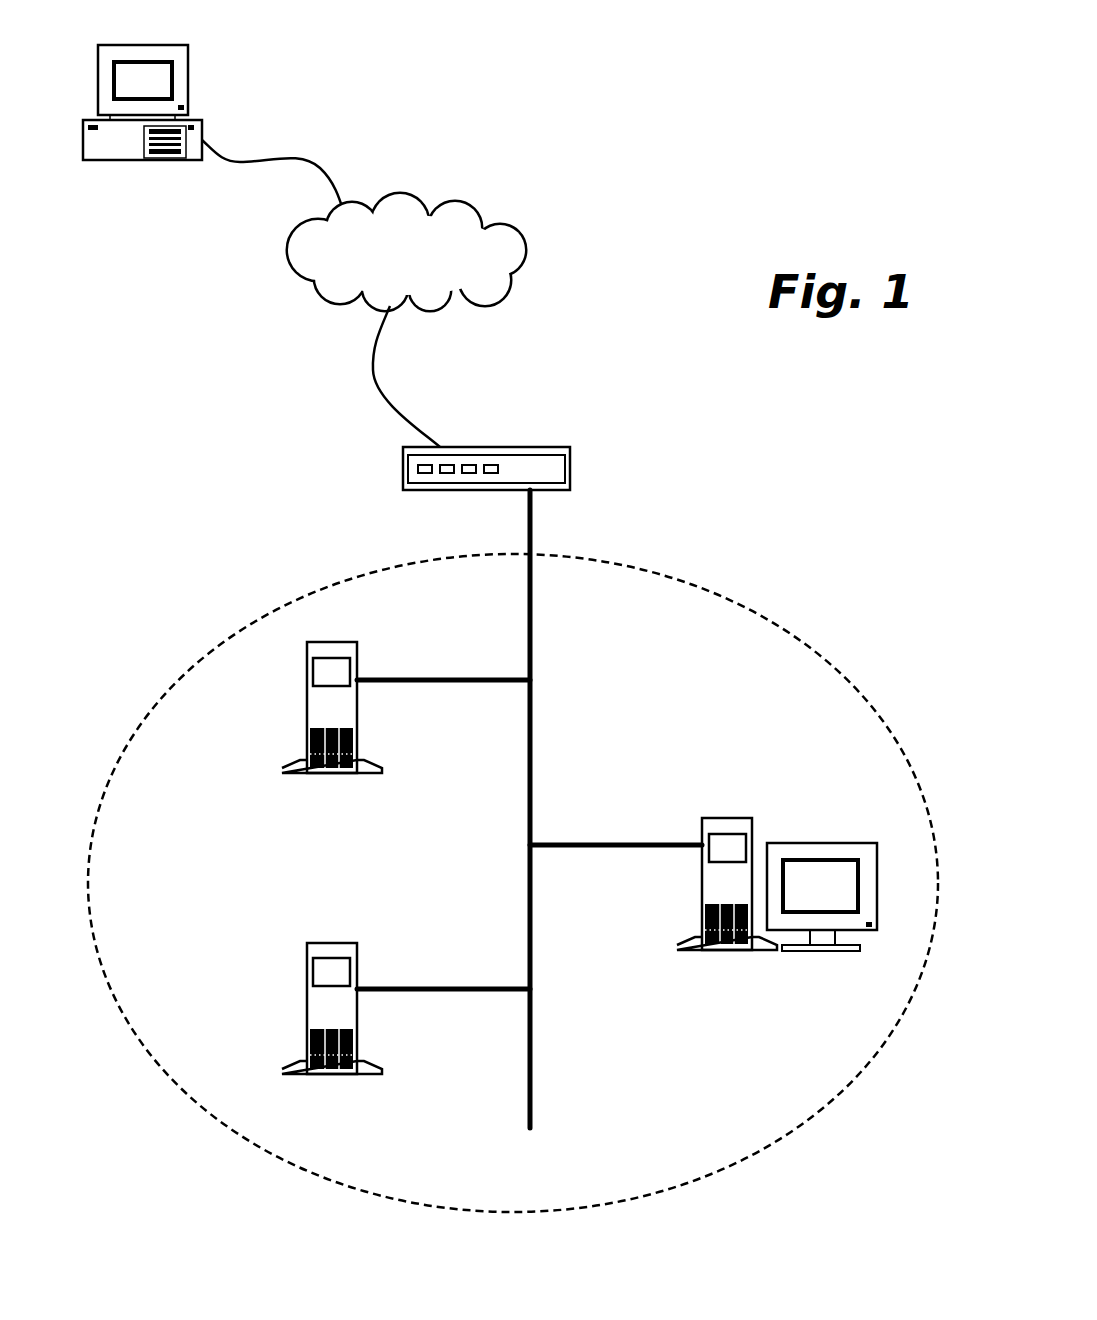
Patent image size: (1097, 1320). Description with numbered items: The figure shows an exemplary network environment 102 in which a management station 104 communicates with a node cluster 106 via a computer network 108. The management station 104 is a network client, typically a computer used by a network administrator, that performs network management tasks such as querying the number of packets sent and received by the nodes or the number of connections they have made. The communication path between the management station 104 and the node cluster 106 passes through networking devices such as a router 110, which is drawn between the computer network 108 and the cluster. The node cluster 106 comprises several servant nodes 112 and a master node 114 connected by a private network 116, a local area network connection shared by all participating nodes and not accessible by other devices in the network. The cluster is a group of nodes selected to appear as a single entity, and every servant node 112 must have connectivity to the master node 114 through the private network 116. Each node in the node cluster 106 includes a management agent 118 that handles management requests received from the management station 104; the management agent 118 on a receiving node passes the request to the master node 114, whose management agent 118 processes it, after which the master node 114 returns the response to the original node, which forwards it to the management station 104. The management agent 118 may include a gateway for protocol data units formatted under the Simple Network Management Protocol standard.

The network environment 102 is at (654, 68).
The management station 104 is at (188, 68).
The node cluster 106 is at (740, 607).
The computer network 108 is at (513, 230).
The router 110 is at (570, 462).
The servant node 112 is at (307, 695).
The master node 114 is at (702, 890).
The private network 116 is at (533, 1078).
The management agent 118 is at (340, 658).